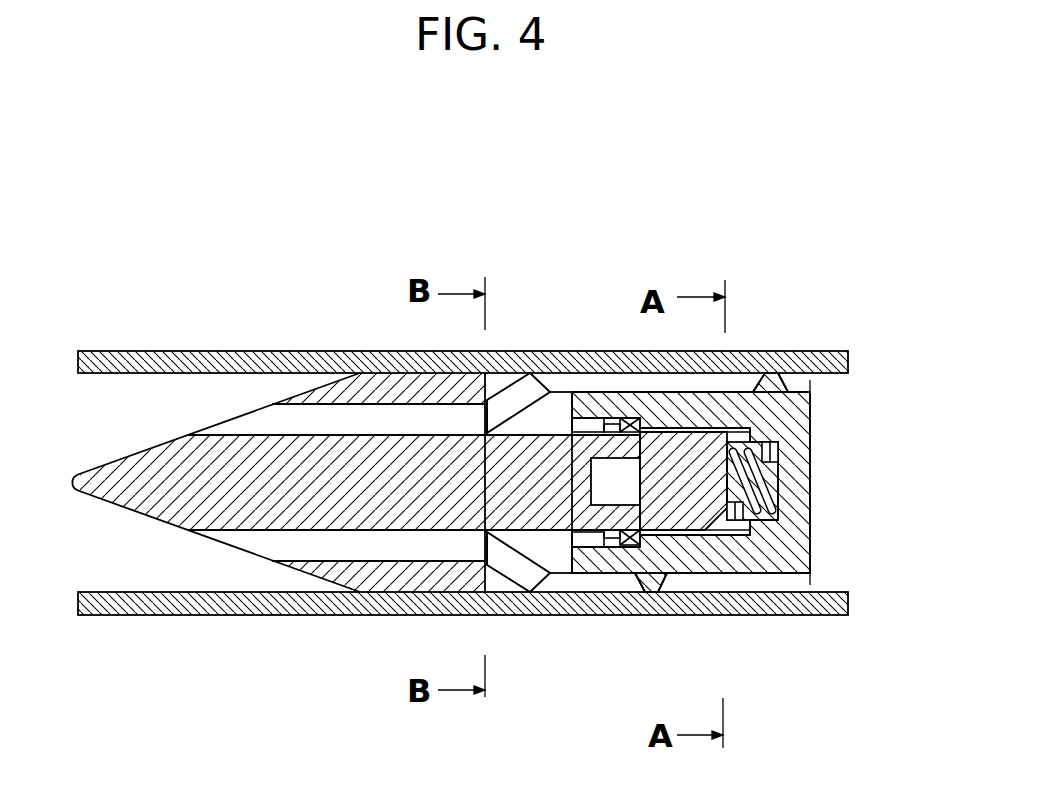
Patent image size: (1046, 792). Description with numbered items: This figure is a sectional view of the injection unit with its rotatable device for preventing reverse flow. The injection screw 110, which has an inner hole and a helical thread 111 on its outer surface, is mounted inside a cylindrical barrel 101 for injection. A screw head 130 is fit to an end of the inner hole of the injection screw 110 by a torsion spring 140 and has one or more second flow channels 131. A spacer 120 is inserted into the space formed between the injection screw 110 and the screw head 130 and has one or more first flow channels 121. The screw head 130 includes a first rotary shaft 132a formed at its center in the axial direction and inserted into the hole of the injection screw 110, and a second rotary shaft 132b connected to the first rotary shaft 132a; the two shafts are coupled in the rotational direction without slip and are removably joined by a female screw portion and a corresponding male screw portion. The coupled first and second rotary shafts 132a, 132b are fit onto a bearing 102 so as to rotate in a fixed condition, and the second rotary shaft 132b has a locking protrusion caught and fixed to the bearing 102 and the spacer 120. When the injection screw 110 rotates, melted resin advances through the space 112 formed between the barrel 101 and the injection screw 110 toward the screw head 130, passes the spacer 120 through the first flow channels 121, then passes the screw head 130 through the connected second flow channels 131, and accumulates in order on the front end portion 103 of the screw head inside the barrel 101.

The barrel 101 is at (463, 428).
The front end portion of the screw head 103 is at (276, 303).
The screw head 130 is at (356, 550).
The second flow channels 131 is at (278, 547).
The first rotary shaft 132a is at (360, 579).
The second rotary shaft 132b is at (672, 512).
The spacer 120 is at (544, 513).
The first flow channels 121 is at (522, 398).
The injection screw 110 is at (744, 380).
The helical thread 111 is at (783, 382).
The space 112 is at (632, 385).
The bearing 102 is at (618, 547).
The torsion spring 140 is at (772, 520).